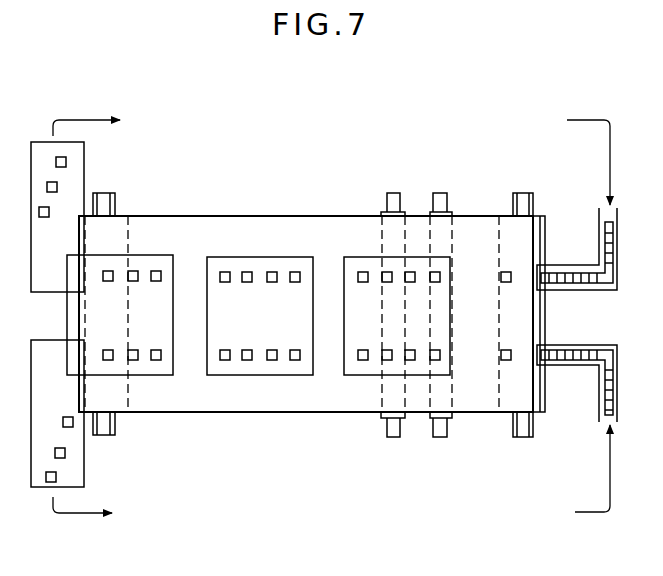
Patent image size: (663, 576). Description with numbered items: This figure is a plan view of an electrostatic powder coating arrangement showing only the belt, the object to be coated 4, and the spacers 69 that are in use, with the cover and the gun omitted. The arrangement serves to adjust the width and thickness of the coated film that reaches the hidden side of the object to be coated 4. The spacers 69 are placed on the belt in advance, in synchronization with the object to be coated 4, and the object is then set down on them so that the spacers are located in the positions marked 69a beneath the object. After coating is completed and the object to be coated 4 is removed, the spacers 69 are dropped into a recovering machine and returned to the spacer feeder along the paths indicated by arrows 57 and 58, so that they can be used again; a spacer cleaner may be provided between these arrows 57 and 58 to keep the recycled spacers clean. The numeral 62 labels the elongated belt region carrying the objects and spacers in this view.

The object to be coated 4 is at (252, 255).
The carrier body / jig 62 is at (338, 216).
The located spacers 69a is at (363, 361).
The spacer 69 is at (506, 361).
The arrow 57 is at (78, 513).
The arrow 58 is at (590, 512).